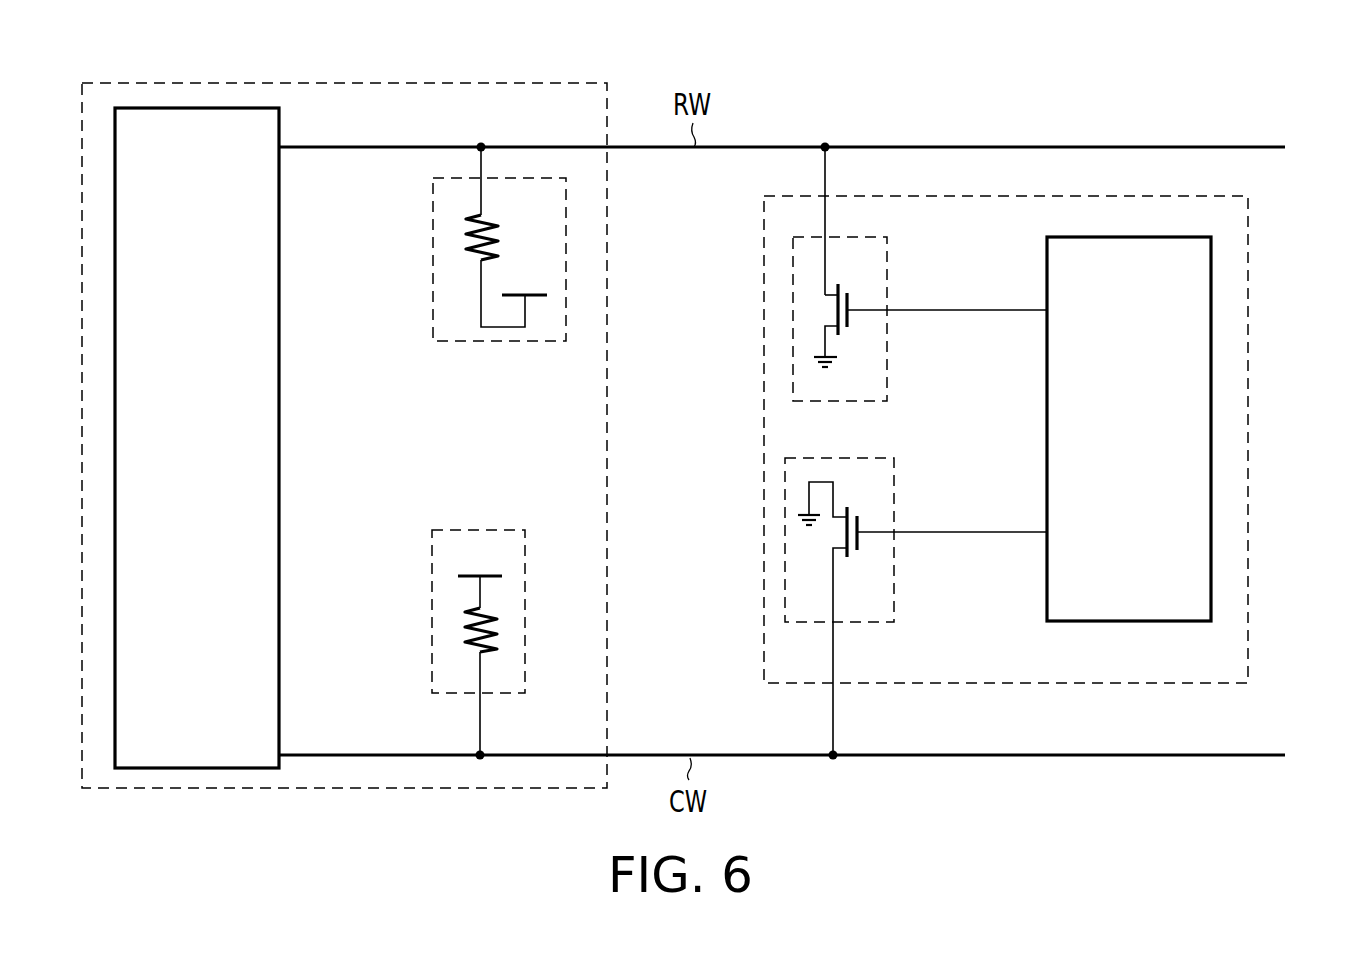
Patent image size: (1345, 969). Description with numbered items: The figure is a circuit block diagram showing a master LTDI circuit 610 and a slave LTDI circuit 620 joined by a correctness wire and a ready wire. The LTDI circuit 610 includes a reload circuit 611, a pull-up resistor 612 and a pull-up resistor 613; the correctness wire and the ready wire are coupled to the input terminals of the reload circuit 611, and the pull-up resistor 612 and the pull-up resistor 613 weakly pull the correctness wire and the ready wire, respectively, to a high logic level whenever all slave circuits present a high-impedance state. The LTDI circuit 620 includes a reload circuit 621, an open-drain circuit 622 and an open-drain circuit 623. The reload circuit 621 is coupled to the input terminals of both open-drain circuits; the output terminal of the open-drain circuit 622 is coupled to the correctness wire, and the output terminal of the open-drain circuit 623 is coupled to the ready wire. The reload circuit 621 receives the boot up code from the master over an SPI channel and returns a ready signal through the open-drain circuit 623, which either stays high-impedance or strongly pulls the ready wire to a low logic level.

The LTDI circuit 610 is at (328, 83).
The reload circuit 611 is at (281, 330).
The pull-up resistor 612 is at (432, 577).
The pull-up resistor 613 is at (432, 245).
The LTDI circuit 620 is at (1250, 393).
The reload circuit 621 is at (1045, 366).
The open-drain circuit 622 is at (895, 488).
The open-drain circuit 623 is at (888, 257).